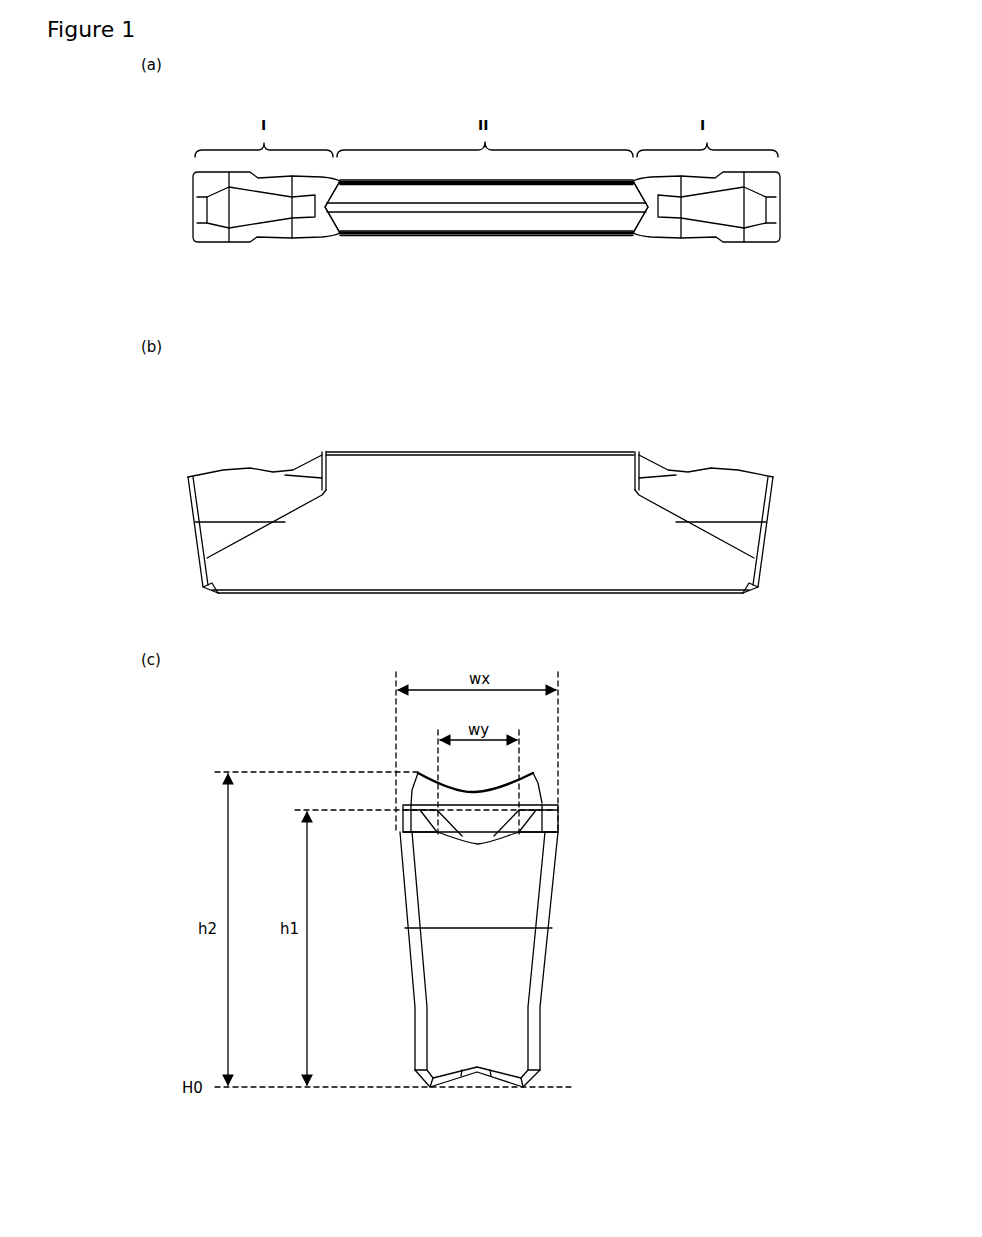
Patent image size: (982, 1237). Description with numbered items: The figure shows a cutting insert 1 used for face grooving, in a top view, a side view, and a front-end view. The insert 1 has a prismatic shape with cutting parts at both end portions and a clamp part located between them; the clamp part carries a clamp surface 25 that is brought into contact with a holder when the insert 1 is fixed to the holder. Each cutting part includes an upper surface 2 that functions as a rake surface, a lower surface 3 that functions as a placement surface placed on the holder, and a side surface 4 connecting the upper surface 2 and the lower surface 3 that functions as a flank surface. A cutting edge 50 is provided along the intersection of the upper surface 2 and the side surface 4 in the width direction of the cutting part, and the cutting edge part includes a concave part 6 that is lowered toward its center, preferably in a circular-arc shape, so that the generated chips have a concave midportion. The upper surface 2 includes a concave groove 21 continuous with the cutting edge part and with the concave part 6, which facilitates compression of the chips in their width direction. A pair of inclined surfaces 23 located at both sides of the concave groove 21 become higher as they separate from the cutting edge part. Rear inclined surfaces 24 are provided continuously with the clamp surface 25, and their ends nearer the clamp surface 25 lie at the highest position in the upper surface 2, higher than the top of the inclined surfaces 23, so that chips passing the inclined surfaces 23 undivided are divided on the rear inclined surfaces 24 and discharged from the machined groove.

The cutting insert 1 is at (481, 584).
The upper surface 2 is at (480, 220).
The concave groove 21 is at (268, 212).
The concave part 6 is at (193, 203).
The cutting edge 50 is at (195, 234).
The side surface 4 is at (253, 508).
The lower surface 3 is at (480, 594).
The clamp surface 25 is at (530, 773).
The rear inclined surface 24 is at (533, 798).
The inclined surface 23 is at (546, 823).